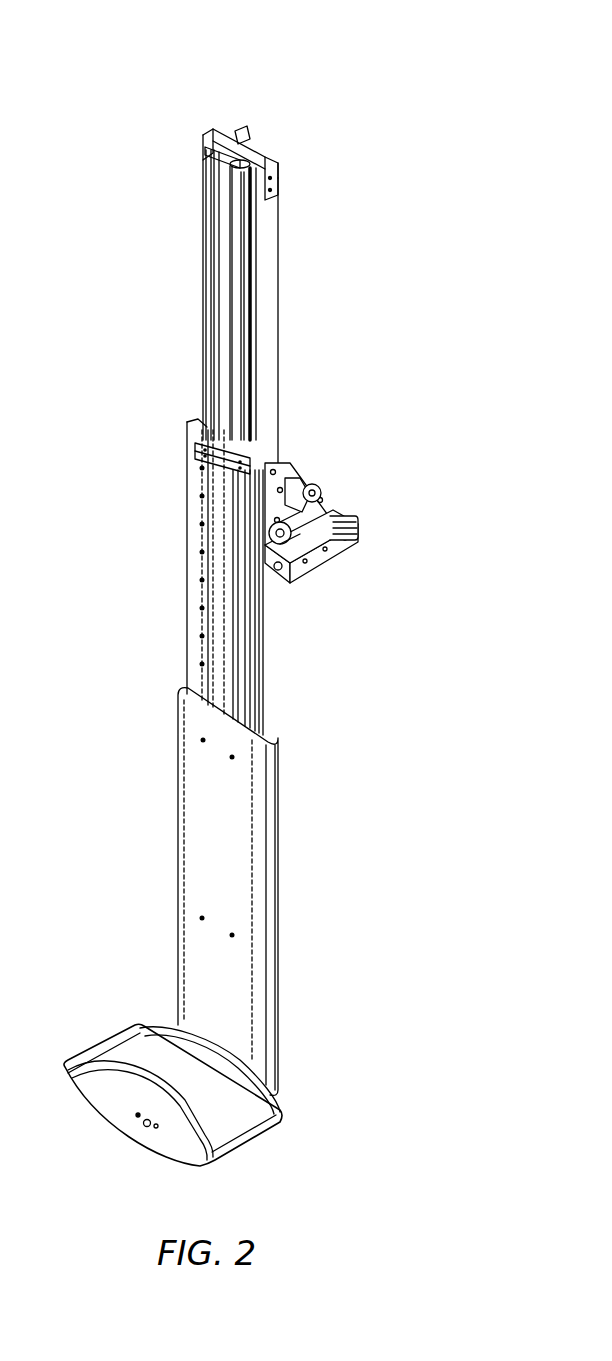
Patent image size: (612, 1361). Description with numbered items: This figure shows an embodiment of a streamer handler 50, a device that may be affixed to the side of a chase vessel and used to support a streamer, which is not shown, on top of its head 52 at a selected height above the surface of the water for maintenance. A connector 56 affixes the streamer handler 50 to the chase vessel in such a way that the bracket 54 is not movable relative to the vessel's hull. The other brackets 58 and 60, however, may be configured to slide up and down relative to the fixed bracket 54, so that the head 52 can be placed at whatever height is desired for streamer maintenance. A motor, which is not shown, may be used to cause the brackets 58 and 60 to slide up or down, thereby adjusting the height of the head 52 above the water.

The streamer handler 50 is at (162, 69).
The head 52 is at (148, 1137).
The bracket 54 is at (277, 316).
The connector 56 is at (365, 543).
The bracket 58 is at (190, 575).
The bracket 60 is at (188, 840).